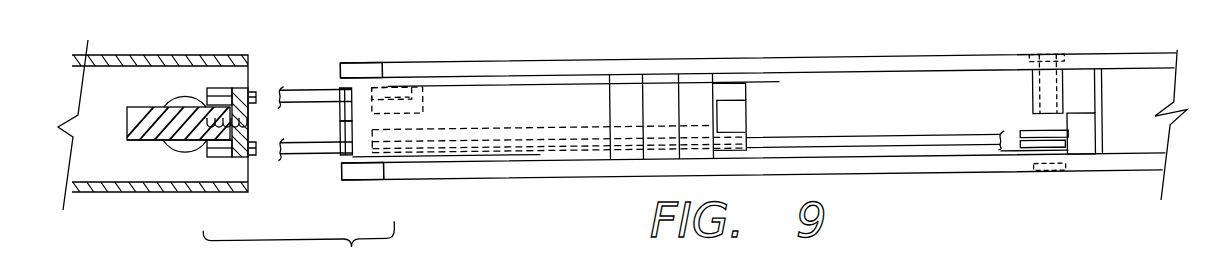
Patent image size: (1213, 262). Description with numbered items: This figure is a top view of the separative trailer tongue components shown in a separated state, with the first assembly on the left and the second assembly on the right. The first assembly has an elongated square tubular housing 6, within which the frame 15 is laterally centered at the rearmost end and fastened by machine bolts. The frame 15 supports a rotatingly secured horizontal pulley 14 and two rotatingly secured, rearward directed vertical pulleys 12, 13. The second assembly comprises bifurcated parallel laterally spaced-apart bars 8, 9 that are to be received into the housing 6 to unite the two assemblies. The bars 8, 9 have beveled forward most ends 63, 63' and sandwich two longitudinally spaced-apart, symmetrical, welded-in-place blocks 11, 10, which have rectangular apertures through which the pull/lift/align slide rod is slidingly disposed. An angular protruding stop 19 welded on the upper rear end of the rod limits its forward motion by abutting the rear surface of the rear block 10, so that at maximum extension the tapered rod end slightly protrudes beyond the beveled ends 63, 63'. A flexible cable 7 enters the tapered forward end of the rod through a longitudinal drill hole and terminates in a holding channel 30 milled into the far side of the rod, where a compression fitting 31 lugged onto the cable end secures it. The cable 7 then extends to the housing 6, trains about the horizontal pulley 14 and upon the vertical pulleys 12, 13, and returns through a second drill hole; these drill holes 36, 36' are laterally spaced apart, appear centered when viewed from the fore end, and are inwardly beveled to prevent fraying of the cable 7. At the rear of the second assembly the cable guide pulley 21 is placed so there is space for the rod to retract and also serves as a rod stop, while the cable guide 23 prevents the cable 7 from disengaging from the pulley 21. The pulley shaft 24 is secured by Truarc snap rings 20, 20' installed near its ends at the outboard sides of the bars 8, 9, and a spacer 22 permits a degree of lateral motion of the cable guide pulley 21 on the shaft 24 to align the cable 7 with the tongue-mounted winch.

The elongated square tubular housing 6 is at (132, 193).
The flexible cable 7 is at (324, 140).
The bar 8 is at (535, 177).
The bar 9 is at (818, 73).
The block 10 is at (692, 109).
The block 11 is at (632, 108).
The vertical pulley 12 is at (225, 158).
The vertical pulley 13 is at (222, 88).
The horizontal pulley 14 is at (178, 100).
The frame 15 is at (137, 142).
The protruding stop 19 is at (733, 115).
The snap ring 20 is at (1022, 38).
The snap ring 20' is at (1073, 186).
The cable guide pulley 21 is at (1022, 161).
The spacer 22 is at (1058, 104).
The cable guide 23 is at (1083, 147).
The pulley shaft 24 is at (1047, 136).
The holding channel 30 is at (423, 91).
The compression fitting 31 is at (385, 92).
The drill hole 36 is at (316, 167).
The drill hole 36' is at (314, 83).
The beveled forward most end 63 is at (298, 205).
The beveled forward most end 63' is at (332, 43).